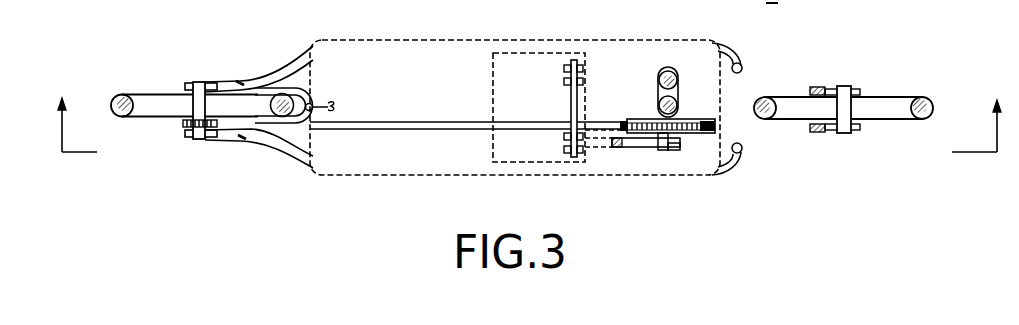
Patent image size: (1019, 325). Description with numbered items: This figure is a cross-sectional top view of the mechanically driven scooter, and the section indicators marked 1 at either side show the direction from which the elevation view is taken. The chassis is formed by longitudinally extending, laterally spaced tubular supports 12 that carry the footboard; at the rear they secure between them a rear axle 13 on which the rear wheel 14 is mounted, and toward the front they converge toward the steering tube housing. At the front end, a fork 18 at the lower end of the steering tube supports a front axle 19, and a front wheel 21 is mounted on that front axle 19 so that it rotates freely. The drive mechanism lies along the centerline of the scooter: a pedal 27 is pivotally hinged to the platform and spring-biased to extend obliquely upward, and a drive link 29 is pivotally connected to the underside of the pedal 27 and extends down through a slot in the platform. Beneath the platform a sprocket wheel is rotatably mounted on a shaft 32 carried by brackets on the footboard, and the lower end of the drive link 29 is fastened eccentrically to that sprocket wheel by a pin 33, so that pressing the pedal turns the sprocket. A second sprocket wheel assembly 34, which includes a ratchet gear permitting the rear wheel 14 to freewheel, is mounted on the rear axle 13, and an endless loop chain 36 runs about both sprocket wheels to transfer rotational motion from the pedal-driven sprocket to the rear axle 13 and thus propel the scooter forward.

The section line 1- 1 is at (528, 106).
The tubular supports 12 is at (240, 82).
The rear axle 13 is at (191, 108).
The rear wheel 14 is at (120, 97).
The fork 18 is at (815, 86).
The front axle 19 is at (847, 108).
The front wheel 21 is at (893, 98).
The pedal 27 is at (493, 148).
The drive link 29 is at (627, 152).
The shaft 32 is at (657, 103).
The pin 33 is at (667, 152).
The sprocket wheel assembly 34 is at (183, 127).
The endless loop chain 36 is at (437, 121).